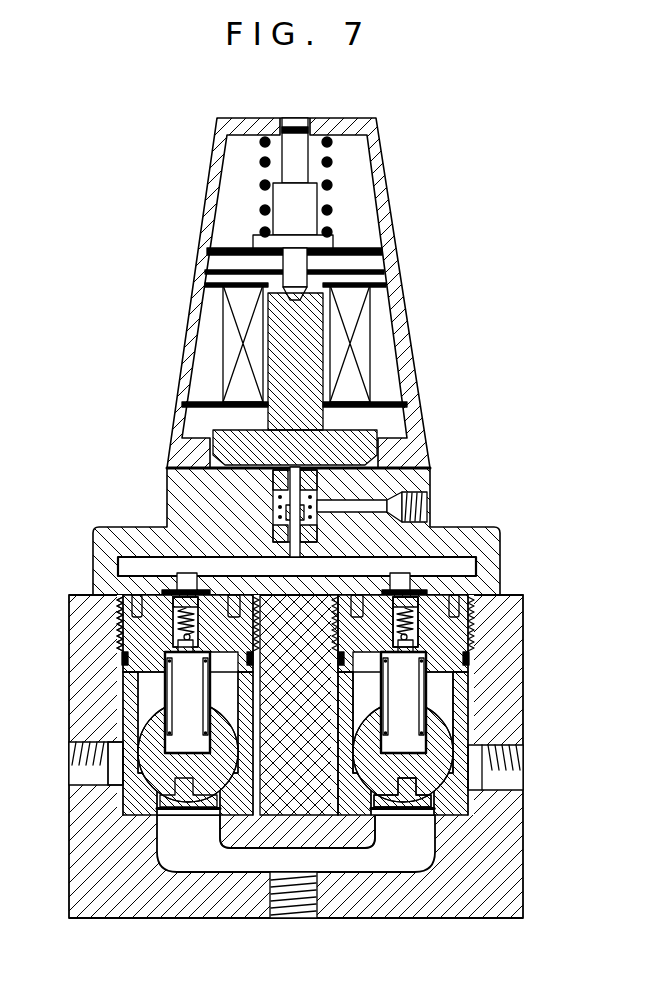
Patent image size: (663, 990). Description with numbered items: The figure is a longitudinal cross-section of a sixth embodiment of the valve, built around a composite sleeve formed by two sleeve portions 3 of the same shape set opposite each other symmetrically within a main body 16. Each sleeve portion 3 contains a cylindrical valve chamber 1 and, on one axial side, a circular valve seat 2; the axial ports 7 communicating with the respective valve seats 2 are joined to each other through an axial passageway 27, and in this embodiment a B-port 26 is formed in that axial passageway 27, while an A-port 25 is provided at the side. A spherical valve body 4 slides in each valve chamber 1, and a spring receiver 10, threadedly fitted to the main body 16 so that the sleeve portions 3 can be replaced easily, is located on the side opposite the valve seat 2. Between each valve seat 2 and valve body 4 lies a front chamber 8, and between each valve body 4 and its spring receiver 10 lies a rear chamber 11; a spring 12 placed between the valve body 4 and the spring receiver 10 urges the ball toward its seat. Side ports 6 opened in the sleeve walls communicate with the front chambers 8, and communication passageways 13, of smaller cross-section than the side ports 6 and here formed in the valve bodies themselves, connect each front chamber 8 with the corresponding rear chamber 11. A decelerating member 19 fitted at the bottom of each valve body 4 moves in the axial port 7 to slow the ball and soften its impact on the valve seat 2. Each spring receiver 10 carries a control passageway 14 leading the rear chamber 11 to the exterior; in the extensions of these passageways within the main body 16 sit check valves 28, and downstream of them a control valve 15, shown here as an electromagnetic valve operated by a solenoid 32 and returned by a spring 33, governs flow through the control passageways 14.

The valve chamber 1 is at (143, 696).
The valve seat 2 is at (140, 770).
The sleeve portion 3 is at (443, 687).
The spherical valve body 4 is at (443, 713).
The side port 6 is at (467, 765).
The axial port 7 is at (387, 848).
The front chamber 8 is at (445, 790).
The spring receiver 10 is at (152, 605).
The rear chamber 11 is at (470, 692).
The spring 12 is at (117, 638).
The communication passageway 13 is at (463, 717).
The control passageway 14 is at (379, 427).
The control valve 15 is at (313, 530).
The main body 16 is at (516, 598).
The decelerating member 19 is at (421, 808).
The A-port 25 is at (69, 753).
The B-port 26 is at (300, 918).
The axial passageway 27 is at (329, 866).
The check valve 28 is at (416, 639).
The solenoid 32 is at (368, 345).
The spring 33 is at (333, 186).